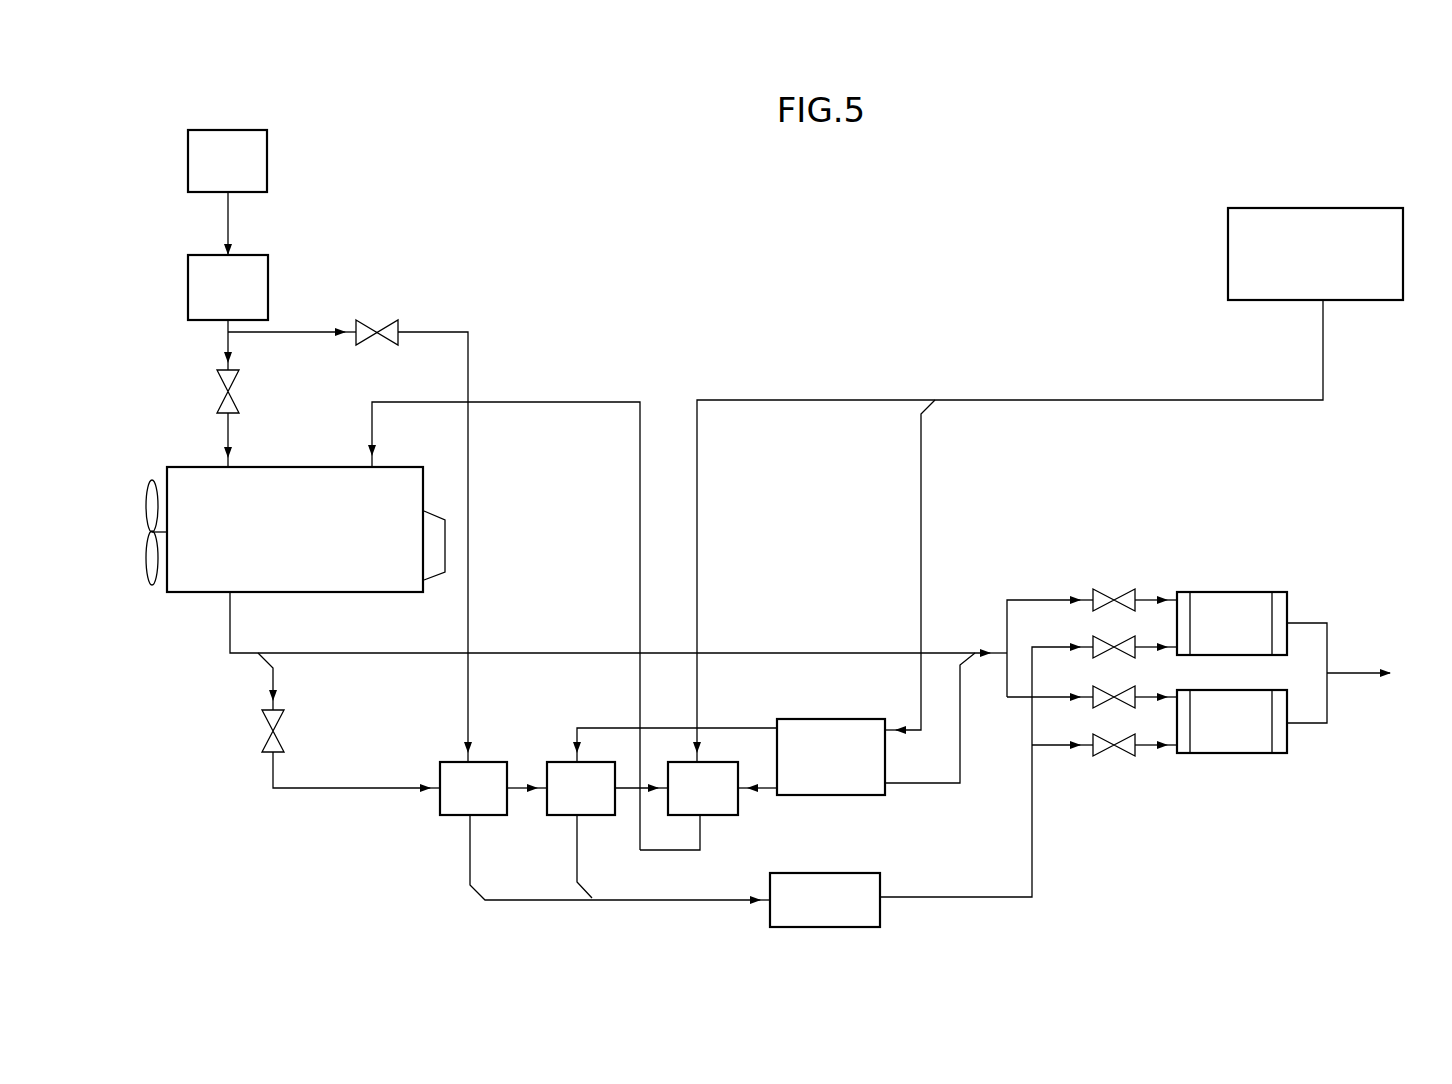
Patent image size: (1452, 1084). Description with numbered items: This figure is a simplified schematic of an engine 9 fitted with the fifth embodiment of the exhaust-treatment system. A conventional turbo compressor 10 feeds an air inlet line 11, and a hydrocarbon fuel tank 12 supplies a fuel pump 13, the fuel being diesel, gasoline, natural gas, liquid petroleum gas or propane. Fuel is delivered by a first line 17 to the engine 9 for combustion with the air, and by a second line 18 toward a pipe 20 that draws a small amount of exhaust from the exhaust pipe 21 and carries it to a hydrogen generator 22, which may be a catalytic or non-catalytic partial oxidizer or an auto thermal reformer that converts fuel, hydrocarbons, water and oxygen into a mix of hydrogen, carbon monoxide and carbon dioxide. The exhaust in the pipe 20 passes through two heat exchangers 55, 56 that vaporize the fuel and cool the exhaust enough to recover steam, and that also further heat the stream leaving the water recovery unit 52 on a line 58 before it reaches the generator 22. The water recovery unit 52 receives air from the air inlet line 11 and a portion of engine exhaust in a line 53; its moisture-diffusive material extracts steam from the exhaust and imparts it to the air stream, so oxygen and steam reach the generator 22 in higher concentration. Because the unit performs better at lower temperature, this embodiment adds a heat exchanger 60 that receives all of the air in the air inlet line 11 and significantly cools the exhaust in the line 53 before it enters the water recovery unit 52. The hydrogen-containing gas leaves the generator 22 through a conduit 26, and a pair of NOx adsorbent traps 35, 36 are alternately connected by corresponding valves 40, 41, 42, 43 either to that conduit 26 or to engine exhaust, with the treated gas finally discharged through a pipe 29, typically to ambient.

The engine 9 is at (282, 559).
The turbo compressor 10 is at (1318, 208).
The air inlet line 11 is at (910, 400).
The hydrocarbon fuel tank 12 is at (224, 128).
The fuel pump 13 is at (207, 253).
The first line 17 is at (226, 428).
The second line 18 is at (466, 478).
The pipe 20 is at (273, 777).
The exhaust pipe 21 is at (372, 653).
The hydrogen generator 22 is at (830, 873).
The conduit 26 is at (1033, 815).
The pipe 29 is at (1348, 670).
The NOx adsorbent trap 35 is at (1262, 592).
The NOx adsorbent trap 36 is at (1262, 690).
The valve 40 is at (1122, 593).
The valve 41 is at (1122, 640).
The valve 42 is at (1122, 690).
The valve 43 is at (1122, 738).
The water recovery unit 52 is at (828, 719).
The line 53 is at (745, 798).
The heat exchanger 55 is at (450, 762).
The heat exchanger 56 is at (560, 762).
The line 58 is at (757, 728).
The additional heat exchanger 60 is at (692, 762).